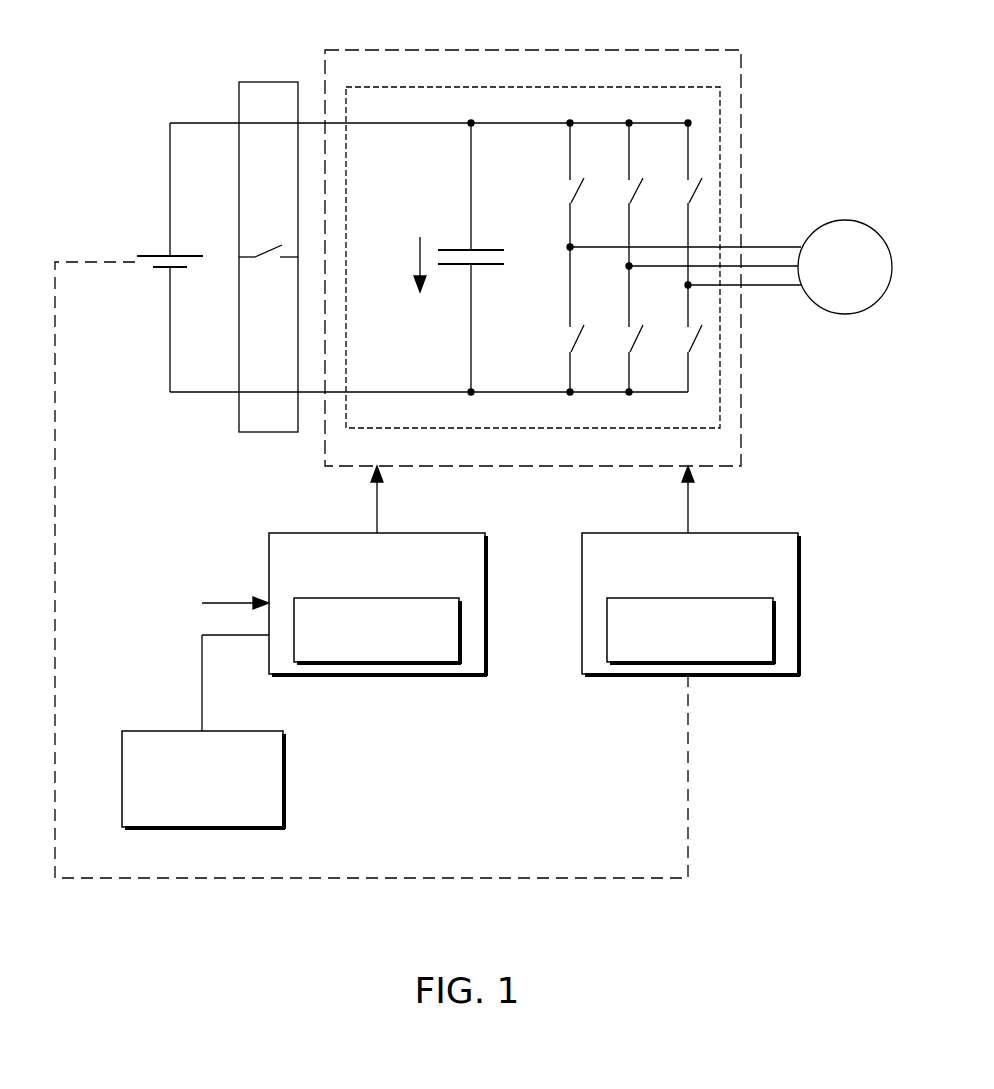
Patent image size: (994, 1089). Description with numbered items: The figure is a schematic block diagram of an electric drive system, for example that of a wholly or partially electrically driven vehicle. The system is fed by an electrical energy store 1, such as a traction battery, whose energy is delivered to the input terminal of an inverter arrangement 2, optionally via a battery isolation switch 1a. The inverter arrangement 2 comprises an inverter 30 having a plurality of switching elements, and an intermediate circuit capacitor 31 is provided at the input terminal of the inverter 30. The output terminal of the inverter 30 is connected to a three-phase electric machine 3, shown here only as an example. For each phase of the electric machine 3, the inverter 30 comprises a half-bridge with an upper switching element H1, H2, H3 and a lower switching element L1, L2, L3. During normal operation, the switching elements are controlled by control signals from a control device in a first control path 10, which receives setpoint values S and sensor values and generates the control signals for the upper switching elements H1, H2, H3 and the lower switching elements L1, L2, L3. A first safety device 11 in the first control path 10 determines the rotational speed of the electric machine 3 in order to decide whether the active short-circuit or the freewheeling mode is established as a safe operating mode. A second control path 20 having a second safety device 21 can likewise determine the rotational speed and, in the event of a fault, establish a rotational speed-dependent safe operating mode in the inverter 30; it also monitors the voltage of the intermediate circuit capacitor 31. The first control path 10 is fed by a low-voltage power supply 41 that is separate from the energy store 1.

The electrical energy store 1 is at (154, 251).
The battery isolation switch 1a is at (268, 81).
The inverter arrangement 2 is at (533, 49).
The electric machine 3 is at (845, 220).
The inverter 30 is at (435, 86).
The intermediate circuit capacitor 31 is at (455, 248).
The first control path 10 is at (486, 600).
The first safety device 11 is at (460, 630).
The second control path 20 is at (800, 600).
The second safety device 21 is at (774, 630).
The power supply 41 is at (284, 777).
The setpoint values S is at (233, 600).
The upper switching element H1 is at (573, 192).
The upper switching element H2 is at (632, 192).
The upper switching element H3 is at (691, 192).
The lower switching element L1 is at (573, 340).
The lower switching element L2 is at (632, 340).
The lower switching element L3 is at (691, 340).